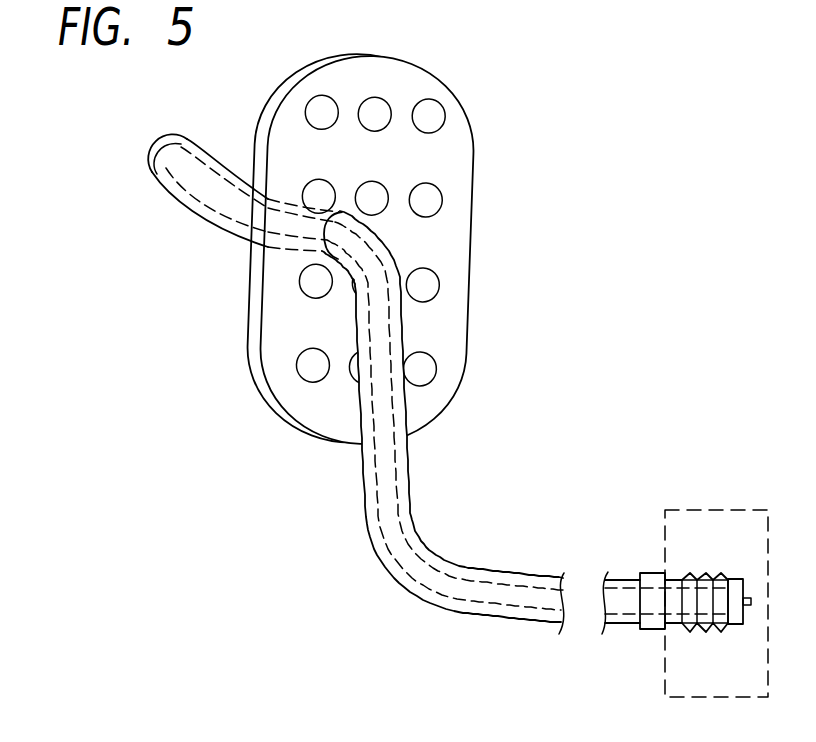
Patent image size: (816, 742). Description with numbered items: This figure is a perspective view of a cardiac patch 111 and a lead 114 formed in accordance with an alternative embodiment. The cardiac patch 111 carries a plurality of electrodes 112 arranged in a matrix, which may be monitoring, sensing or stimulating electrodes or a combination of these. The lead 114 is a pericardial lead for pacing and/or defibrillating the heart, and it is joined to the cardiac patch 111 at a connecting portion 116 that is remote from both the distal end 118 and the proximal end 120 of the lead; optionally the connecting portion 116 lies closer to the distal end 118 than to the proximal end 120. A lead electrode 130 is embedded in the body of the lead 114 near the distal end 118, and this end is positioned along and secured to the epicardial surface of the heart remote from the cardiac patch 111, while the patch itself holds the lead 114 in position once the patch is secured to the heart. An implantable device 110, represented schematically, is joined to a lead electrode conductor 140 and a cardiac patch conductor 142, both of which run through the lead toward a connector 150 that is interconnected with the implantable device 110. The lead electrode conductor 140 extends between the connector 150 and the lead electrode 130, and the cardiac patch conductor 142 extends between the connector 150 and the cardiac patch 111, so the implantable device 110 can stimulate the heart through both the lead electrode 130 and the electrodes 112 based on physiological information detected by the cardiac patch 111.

The implantable device 110 is at (718, 508).
The cardiac patch 111 is at (449, 152).
The electrodes 112 is at (468, 250).
The lead 114 is at (413, 498).
The connecting portion 116 is at (341, 215).
The distal end 118 is at (141, 177).
The proximal end 120 is at (628, 538).
The lead electrode 130 is at (166, 137).
The lead electrode conductor 140 is at (378, 500).
The cardiac patch conductor 142 is at (418, 554).
The connector 150 is at (737, 578).